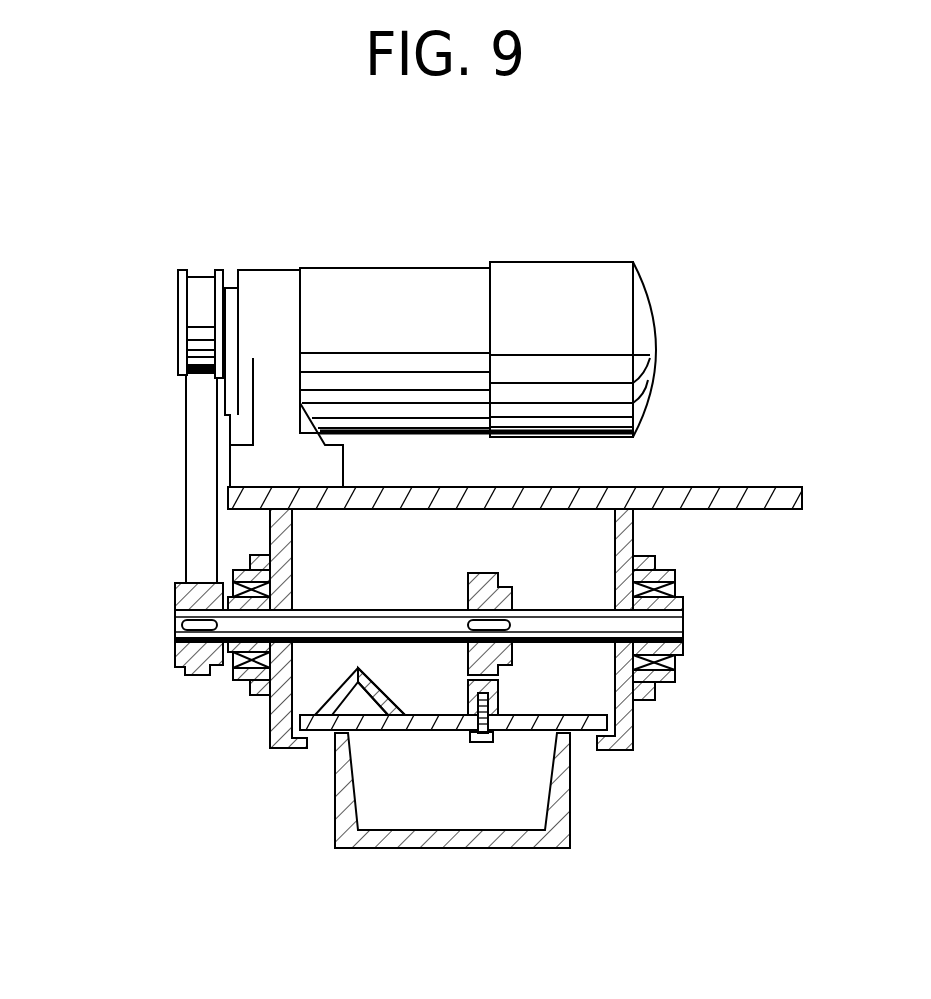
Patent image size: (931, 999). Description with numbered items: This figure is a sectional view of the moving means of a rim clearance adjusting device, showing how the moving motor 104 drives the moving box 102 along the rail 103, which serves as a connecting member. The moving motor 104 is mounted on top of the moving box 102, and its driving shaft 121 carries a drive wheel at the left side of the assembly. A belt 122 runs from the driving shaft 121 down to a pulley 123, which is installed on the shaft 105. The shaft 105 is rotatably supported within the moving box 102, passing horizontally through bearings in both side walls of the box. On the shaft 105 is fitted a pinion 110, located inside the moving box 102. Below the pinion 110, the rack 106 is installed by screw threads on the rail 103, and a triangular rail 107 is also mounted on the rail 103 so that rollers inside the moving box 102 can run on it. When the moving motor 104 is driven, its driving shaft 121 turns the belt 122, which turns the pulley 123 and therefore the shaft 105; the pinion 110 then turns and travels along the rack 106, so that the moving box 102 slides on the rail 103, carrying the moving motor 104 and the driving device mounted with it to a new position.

The moving box 102 is at (737, 478).
The rail 103 is at (422, 848).
The moving motor 104 is at (587, 262).
The shaft 105 is at (177, 630).
The rack 106 is at (500, 702).
The triangular rail 107 is at (368, 700).
The pinion 110 is at (498, 575).
The driving shaft 121 is at (178, 315).
The belt 122 is at (184, 427).
The pulley 123 is at (177, 587).